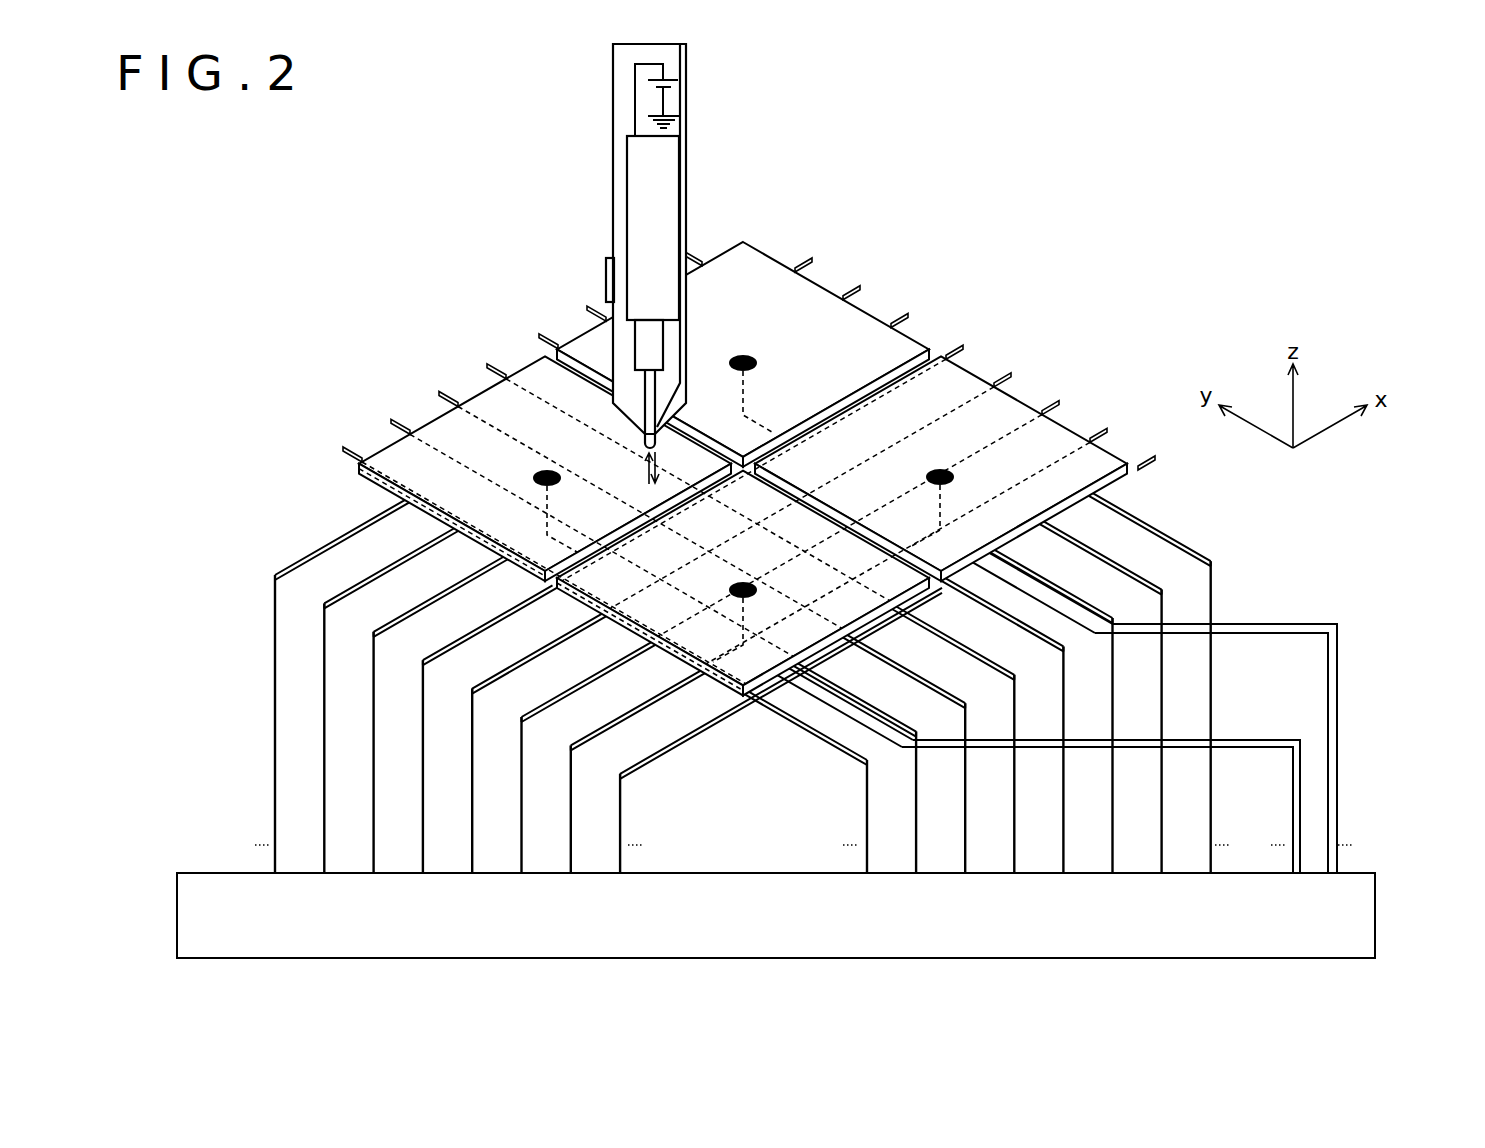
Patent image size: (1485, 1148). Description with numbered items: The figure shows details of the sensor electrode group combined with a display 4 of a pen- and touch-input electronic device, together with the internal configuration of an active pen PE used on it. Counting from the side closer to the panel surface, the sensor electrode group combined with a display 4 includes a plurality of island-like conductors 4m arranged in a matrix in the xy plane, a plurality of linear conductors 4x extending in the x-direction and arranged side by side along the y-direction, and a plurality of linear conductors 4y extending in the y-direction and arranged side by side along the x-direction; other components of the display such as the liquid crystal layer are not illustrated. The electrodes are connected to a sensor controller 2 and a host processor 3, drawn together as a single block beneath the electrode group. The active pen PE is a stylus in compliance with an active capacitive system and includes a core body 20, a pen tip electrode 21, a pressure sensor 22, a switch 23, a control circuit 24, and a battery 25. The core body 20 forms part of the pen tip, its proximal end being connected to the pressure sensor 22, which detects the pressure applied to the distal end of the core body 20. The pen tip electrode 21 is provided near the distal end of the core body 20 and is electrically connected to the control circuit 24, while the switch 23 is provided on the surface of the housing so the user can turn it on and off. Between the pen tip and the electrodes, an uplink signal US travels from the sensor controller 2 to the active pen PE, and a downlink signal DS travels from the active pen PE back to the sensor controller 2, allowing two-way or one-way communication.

The sensor controller 2 is at (813, 915).
The host processor 3 is at (1378, 912).
The sensor electrode group combined with a display 4 is at (804, 522).
The island-like conductors 4m is at (745, 238).
The linear conductors extending in an x-direction 4x is at (859, 444).
The linear conductors extending in the y-direction 4y is at (609, 449).
The core body 20 is at (645, 246).
The pen tip electrode 21 is at (650, 417).
The pressure sensor 22 is at (658, 337).
The switch 23 is at (604, 268).
The control circuit 24 is at (670, 157).
The battery 25 is at (667, 98).
The active pen PE is at (689, 90).
The uplink signal US is at (643, 467).
The downlink signal DS is at (660, 467).